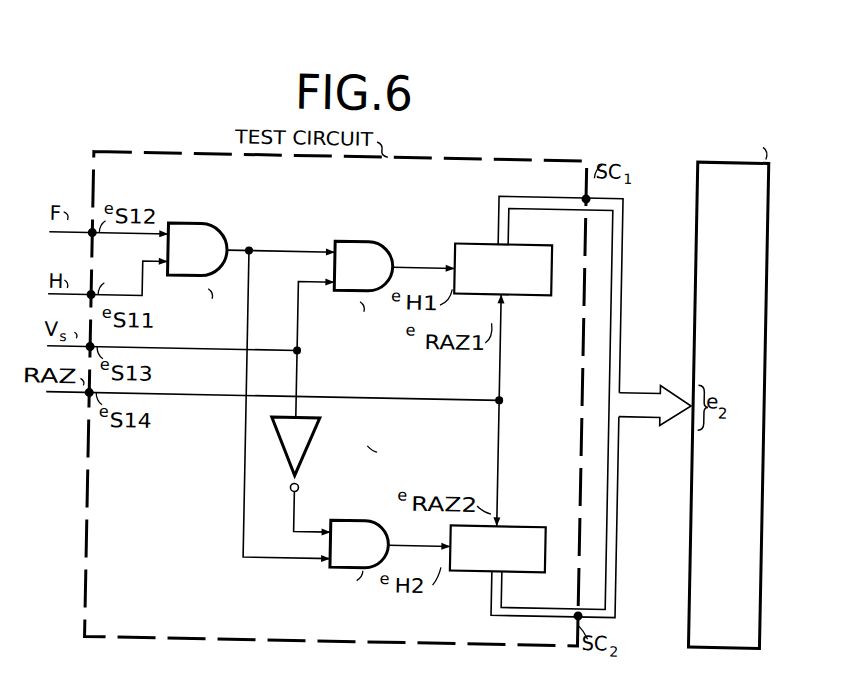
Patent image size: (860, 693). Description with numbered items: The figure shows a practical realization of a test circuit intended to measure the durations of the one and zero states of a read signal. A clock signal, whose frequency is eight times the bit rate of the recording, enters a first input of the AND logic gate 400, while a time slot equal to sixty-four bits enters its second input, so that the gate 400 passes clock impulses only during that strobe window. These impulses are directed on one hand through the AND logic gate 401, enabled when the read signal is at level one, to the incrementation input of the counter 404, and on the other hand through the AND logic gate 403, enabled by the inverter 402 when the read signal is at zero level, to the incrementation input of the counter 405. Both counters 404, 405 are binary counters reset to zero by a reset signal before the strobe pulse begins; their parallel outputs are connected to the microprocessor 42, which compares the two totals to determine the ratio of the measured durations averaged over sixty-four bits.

The AND logic gate 400 is at (219, 219).
The AND logic gate 401 is at (381, 230).
The inverter 402 is at (318, 442).
The AND logic gate 403 is at (378, 516).
The counter 404 is at (474, 234).
The counter 405 is at (526, 526).
The microprocessor 42 is at (693, 182).